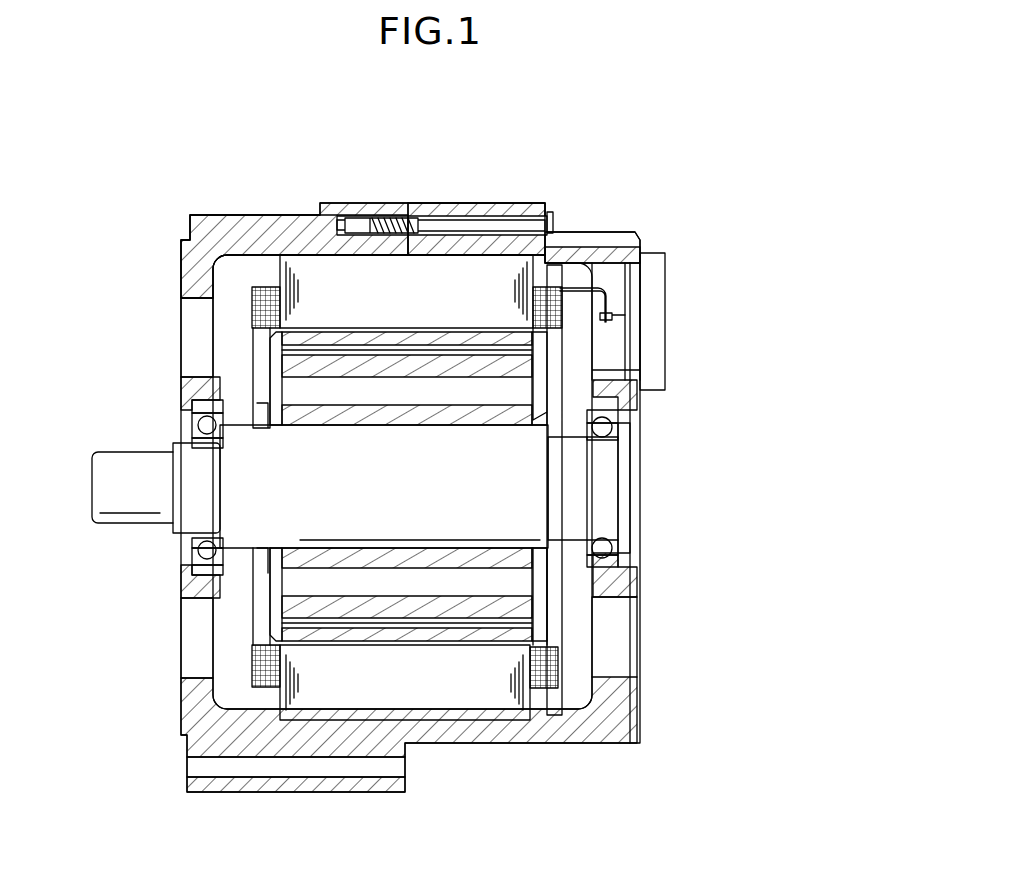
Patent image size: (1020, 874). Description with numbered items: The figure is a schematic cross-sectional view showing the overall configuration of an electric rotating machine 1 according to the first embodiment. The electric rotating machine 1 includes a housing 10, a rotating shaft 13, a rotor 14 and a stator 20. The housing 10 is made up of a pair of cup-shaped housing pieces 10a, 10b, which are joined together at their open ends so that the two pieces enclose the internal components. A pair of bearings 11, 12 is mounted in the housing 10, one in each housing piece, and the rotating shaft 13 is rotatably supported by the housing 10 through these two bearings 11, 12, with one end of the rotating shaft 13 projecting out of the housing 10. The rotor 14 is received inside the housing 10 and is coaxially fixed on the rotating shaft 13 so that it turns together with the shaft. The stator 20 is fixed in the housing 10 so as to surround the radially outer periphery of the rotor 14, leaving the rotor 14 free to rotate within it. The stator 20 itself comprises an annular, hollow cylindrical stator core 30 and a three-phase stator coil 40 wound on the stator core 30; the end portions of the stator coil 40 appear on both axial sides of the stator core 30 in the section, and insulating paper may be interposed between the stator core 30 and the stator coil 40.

The electric rotating machine 1 is at (704, 146).
The housing 10 is at (423, 438).
The cup-shaped housing piece 10a is at (335, 213).
The cup-shaped housing piece 10b is at (443, 210).
The bearing 11 is at (200, 412).
The bearing 12 is at (612, 410).
The rotating shaft 13 is at (135, 505).
The rotor 14 is at (520, 363).
The stator 20 is at (438, 553).
The stator core 30 is at (473, 678).
The stator coil 40 is at (547, 688).